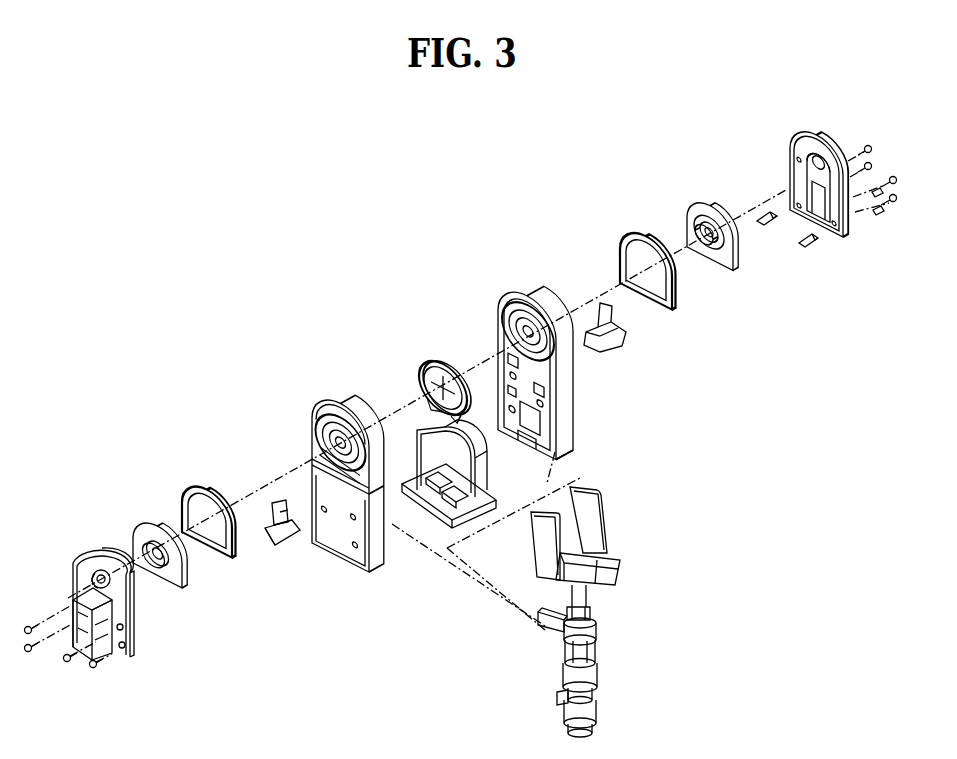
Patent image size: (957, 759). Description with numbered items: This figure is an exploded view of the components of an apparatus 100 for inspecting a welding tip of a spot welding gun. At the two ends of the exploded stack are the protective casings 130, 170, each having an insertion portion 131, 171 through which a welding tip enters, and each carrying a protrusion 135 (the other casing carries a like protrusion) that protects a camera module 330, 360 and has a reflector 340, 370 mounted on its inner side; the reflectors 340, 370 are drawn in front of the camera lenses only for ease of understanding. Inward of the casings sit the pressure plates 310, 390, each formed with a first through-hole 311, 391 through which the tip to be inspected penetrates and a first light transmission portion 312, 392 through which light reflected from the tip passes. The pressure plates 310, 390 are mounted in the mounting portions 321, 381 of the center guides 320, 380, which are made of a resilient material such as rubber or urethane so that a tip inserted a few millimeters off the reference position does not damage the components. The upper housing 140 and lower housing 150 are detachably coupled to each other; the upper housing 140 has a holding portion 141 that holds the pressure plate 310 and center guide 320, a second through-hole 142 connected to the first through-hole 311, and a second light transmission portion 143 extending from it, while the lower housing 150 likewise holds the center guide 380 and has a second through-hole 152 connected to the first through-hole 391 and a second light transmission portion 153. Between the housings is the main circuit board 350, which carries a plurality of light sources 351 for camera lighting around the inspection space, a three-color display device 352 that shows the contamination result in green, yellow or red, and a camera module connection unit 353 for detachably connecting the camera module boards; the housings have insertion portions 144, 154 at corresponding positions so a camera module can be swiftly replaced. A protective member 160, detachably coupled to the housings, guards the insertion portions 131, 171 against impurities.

The apparatus for inspecting a welding tip 100 is at (120, 200).
The protective casing 130 is at (78, 608).
The insertion portion 131 is at (84, 551).
The protrusion 135 is at (84, 645).
The upper housing 140 is at (342, 491).
The holding portion 141 is at (341, 442).
The second through-hole 142 is at (341, 442).
The second light transmission portion 143 is at (362, 484).
The insertion portion 144 is at (340, 520).
The lower housing 150 is at (535, 375).
The second through-hole 152 is at (528, 331).
The second light transmission portion 153 is at (550, 373).
The insertion portion 154 is at (545, 445).
The protective member 160 is at (628, 562).
The protective casing 170 is at (807, 226).
The insertion portion 171 is at (818, 185).
The pressure plate 310 is at (142, 569).
The first through-hole 311 is at (156, 554).
The first light transmission portion 312 is at (160, 549).
The center guide 320 is at (174, 487).
The mounting portion 321 is at (200, 505).
The camera module 330 is at (281, 566).
The reflector 340 is at (270, 510).
The main circuit board 350 is at (413, 371).
The light source 351 is at (445, 388).
The display device 352 is at (442, 353).
The camera module connection unit 353 is at (483, 450).
The camera module 360 is at (648, 372).
The reflector 370 is at (623, 312).
The center guide 380 is at (614, 245).
The mounting portion 381 is at (636, 237).
The pressure plate 390 is at (703, 249).
The first through-hole 391 is at (709, 232).
The first light transmission portion 392 is at (679, 224).